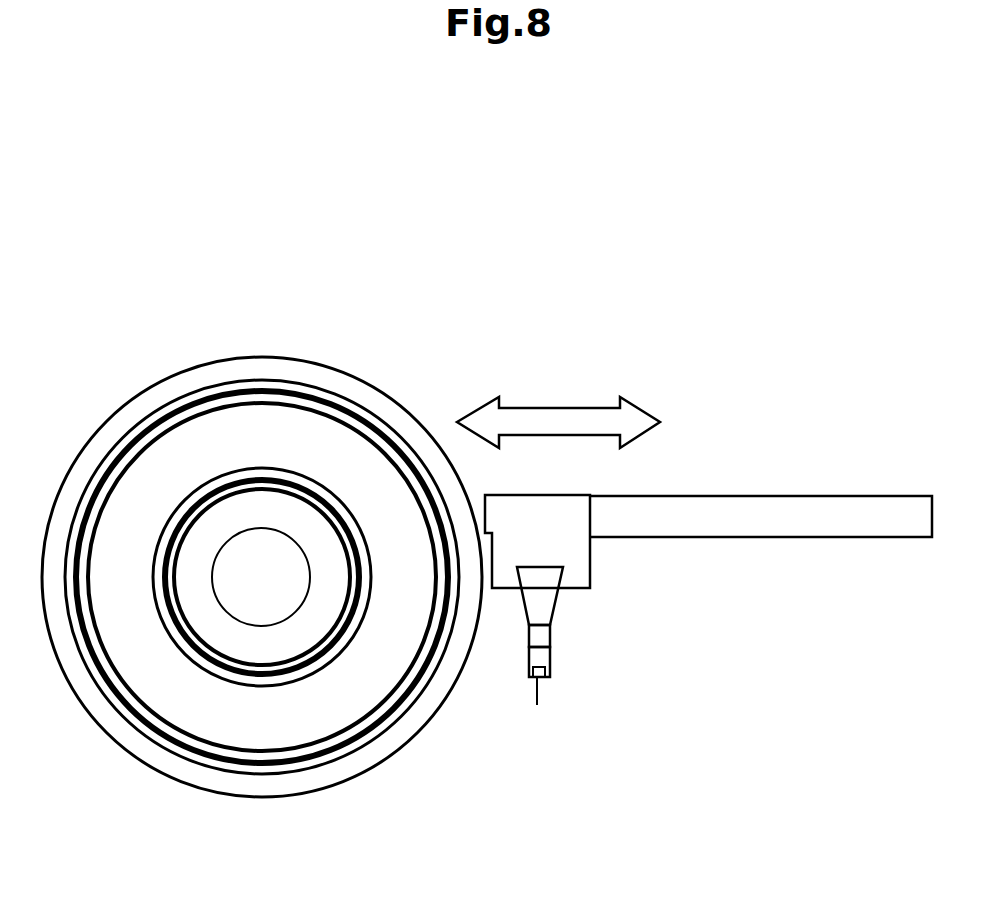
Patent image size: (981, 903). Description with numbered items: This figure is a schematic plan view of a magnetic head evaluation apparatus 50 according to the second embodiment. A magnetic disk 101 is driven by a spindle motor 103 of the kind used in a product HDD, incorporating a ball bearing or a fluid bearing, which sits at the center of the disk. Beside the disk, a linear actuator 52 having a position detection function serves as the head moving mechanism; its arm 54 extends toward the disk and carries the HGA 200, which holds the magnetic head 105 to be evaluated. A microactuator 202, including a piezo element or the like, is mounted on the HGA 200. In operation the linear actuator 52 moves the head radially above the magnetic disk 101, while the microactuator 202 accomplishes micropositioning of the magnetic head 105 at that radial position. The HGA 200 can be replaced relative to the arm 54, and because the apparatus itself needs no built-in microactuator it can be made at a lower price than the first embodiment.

The magnetic head evaluation apparatus 50 is at (455, 305).
The linear actuator 52 is at (755, 522).
The arm 54 is at (543, 597).
The magnetic disk 101 is at (265, 370).
The spindle motor 103 is at (240, 555).
The magnetic head 105 is at (545, 680).
The HGA 200 is at (540, 660).
The microactuator 202 is at (540, 633).